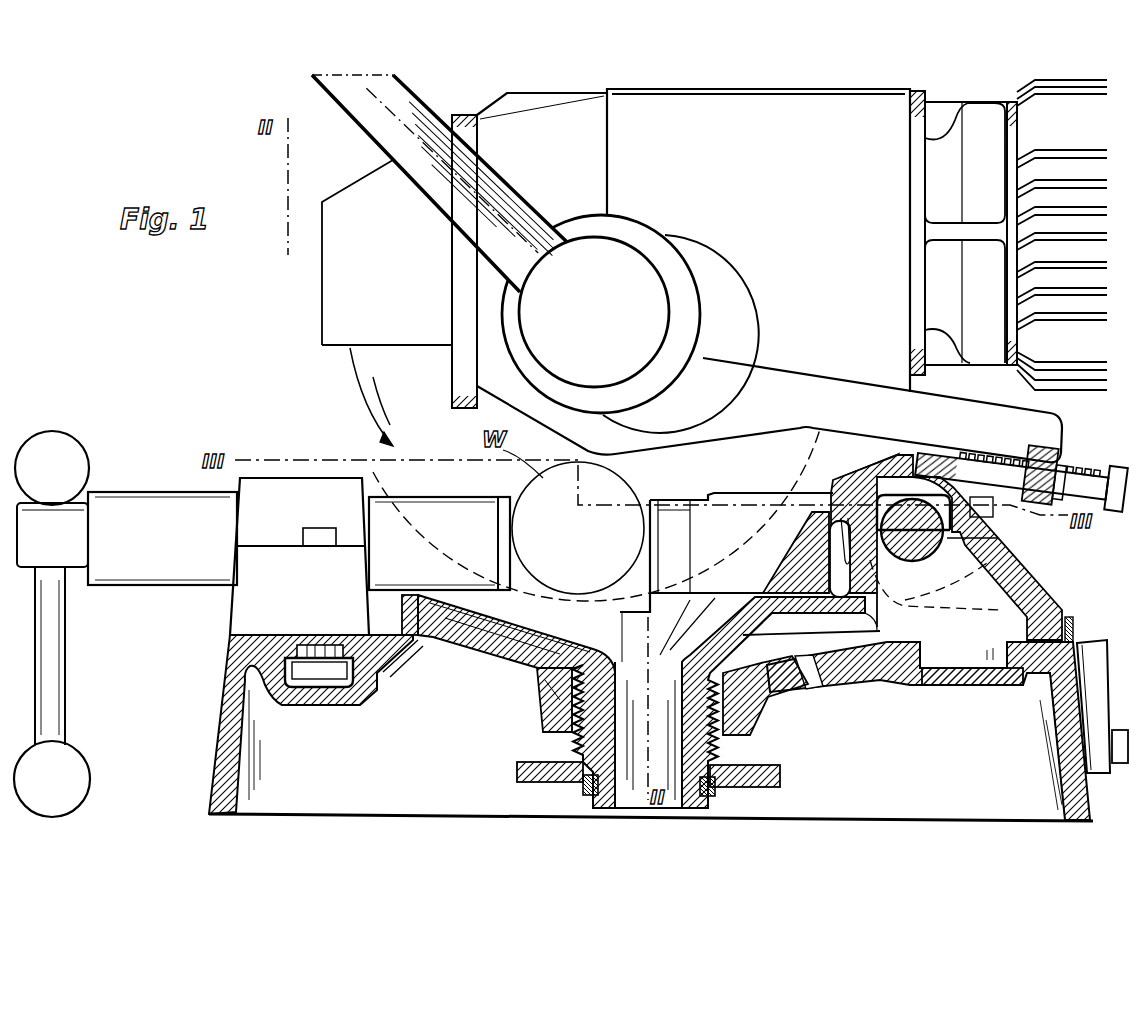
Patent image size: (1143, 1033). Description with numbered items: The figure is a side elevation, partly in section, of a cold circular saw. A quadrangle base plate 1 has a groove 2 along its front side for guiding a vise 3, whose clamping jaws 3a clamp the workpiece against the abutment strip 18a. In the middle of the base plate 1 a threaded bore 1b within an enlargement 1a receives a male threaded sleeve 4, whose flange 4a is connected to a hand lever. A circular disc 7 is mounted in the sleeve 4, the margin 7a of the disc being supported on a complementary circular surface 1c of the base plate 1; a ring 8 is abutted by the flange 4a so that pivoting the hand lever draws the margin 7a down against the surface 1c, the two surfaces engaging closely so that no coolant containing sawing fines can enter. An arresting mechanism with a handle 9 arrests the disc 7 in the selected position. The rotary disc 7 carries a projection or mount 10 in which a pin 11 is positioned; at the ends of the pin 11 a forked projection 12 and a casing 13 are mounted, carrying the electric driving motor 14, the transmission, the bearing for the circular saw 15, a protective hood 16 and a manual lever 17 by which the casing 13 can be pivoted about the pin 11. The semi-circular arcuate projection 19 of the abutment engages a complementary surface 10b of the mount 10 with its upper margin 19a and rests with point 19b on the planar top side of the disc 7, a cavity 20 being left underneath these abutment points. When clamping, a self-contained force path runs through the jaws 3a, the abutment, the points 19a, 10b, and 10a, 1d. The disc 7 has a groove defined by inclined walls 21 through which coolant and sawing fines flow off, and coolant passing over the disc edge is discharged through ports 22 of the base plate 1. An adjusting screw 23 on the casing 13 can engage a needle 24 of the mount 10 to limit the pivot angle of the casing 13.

The base plate 1 is at (227, 768).
The enlargement 1a is at (540, 696).
The threaded bore 1b is at (566, 712).
The circular surface 1c is at (416, 660).
The abutment point 1d is at (1053, 655).
The groove 2 is at (300, 650).
The vise 3 is at (240, 608).
The clamping jaws 3a is at (442, 510).
The male threaded sleeve 4 is at (573, 740).
The flange 4a is at (517, 770).
The circular disc 7 is at (507, 633).
The margin 7a is at (532, 612).
The ring 8 is at (586, 788).
The handle 9 is at (1110, 680).
The projection or mount 10 is at (1033, 583).
The abutment point 10a is at (1073, 613).
The complementary surface 10b is at (876, 555).
The pin 11 is at (938, 553).
The forked projection 12 is at (868, 453).
The casing 13 is at (769, 275).
The electric driving motor 14 is at (1036, 106).
The circular saw 15 is at (358, 378).
The protective hood 16 is at (349, 183).
The manual lever 17 is at (404, 110).
The strip 18a is at (683, 484).
The semi-circular arcuate projection 19 is at (740, 497).
The upper margin 19a is at (838, 520).
The point 19b is at (760, 570).
The cavity 20 is at (803, 562).
The walls 21 is at (617, 633).
The ports 22 is at (387, 680).
The adjusting screw 23 is at (1085, 480).
The needle 24 is at (907, 460).